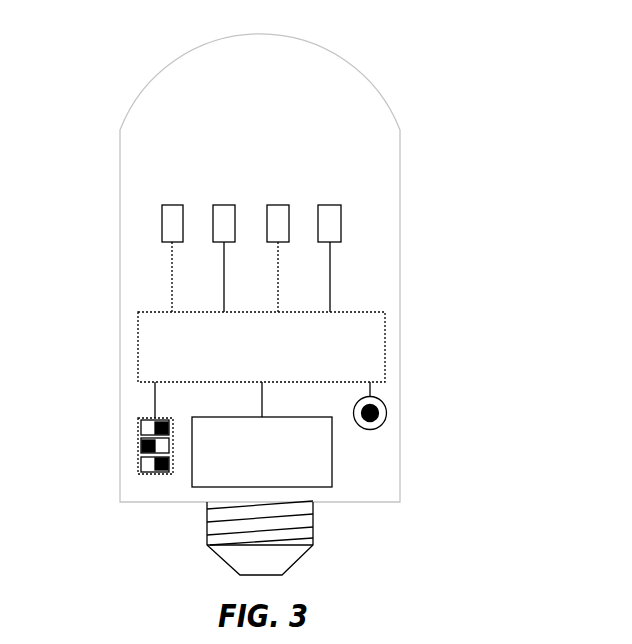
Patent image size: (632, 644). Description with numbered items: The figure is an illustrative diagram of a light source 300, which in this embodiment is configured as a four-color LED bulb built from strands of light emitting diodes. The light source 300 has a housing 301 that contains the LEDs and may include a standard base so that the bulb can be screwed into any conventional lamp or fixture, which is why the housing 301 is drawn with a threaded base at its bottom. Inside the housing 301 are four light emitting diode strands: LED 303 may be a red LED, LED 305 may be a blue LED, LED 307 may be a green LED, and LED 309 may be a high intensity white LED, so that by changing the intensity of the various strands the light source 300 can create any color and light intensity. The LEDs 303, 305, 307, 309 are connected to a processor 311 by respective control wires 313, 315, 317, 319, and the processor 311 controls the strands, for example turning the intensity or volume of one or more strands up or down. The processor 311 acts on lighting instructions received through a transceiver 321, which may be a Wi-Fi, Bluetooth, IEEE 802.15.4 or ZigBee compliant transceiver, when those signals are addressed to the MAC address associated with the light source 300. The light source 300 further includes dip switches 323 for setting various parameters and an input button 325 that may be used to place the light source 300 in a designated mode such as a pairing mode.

The light source 300 is at (453, 137).
The housing 301 is at (392, 100).
The LED 303 is at (162, 220).
The LED 305 is at (213, 214).
The LED 307 is at (297, 215).
The LED 309 is at (342, 223).
The processor 311 is at (396, 348).
The control wire 313 is at (168, 293).
The control wire 315 is at (224, 281).
The control wire 317 is at (282, 283).
The control wire 319 is at (334, 291).
The transceiver 321 is at (332, 450).
The dip switches 323 is at (138, 438).
The input button 325 is at (387, 413).